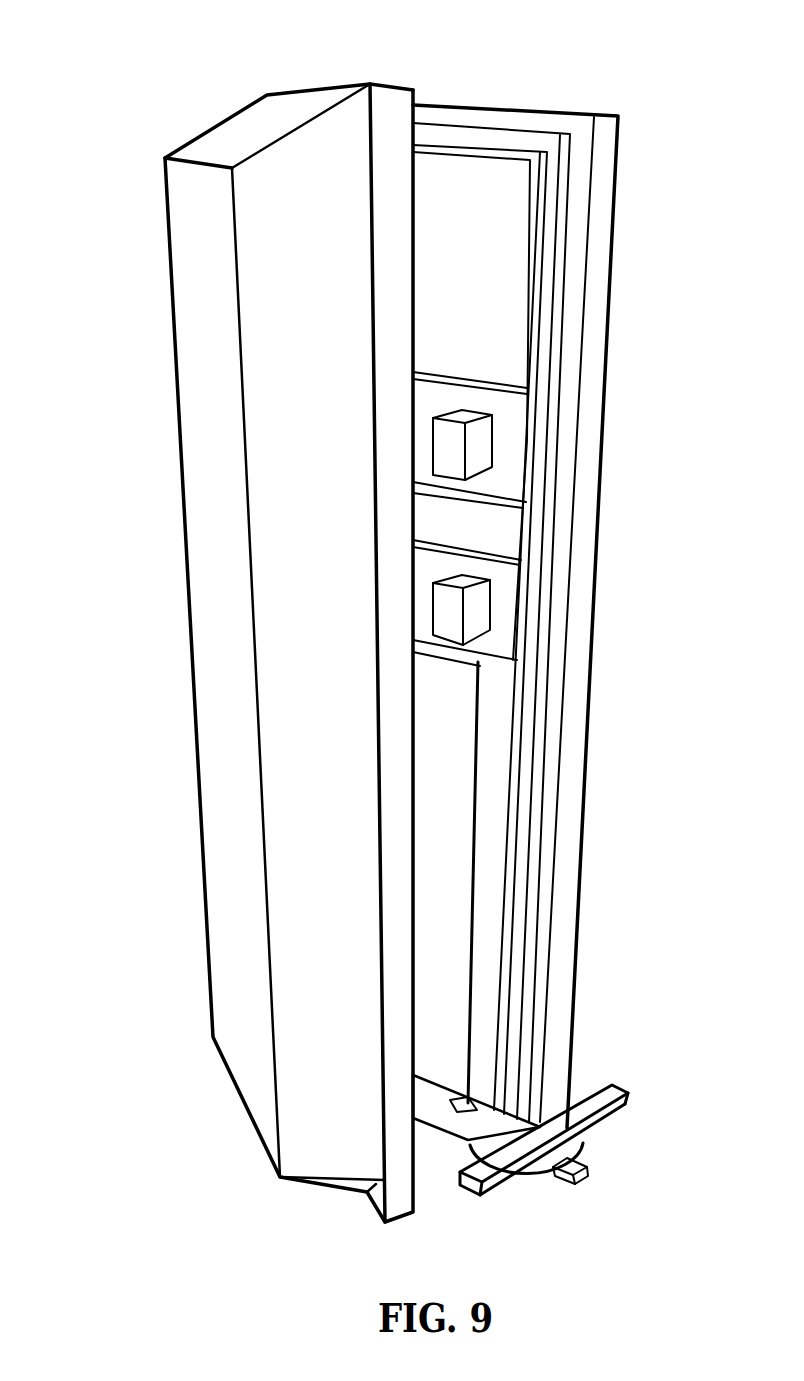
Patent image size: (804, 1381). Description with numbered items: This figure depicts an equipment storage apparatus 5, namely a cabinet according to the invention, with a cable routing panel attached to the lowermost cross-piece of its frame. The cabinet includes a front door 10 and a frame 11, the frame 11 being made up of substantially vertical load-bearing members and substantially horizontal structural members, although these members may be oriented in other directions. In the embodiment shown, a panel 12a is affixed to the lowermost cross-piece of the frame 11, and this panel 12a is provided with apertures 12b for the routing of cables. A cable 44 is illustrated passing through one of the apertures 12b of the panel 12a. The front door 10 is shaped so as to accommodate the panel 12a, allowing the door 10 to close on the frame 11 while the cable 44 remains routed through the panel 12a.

The equipment storage apparatus 5 is at (630, 93).
The front door 10 is at (143, 512).
The frame 11 is at (632, 583).
The cable 44 is at (478, 805).
The panel 12a is at (447, 1138).
The apertures 12b is at (475, 1100).